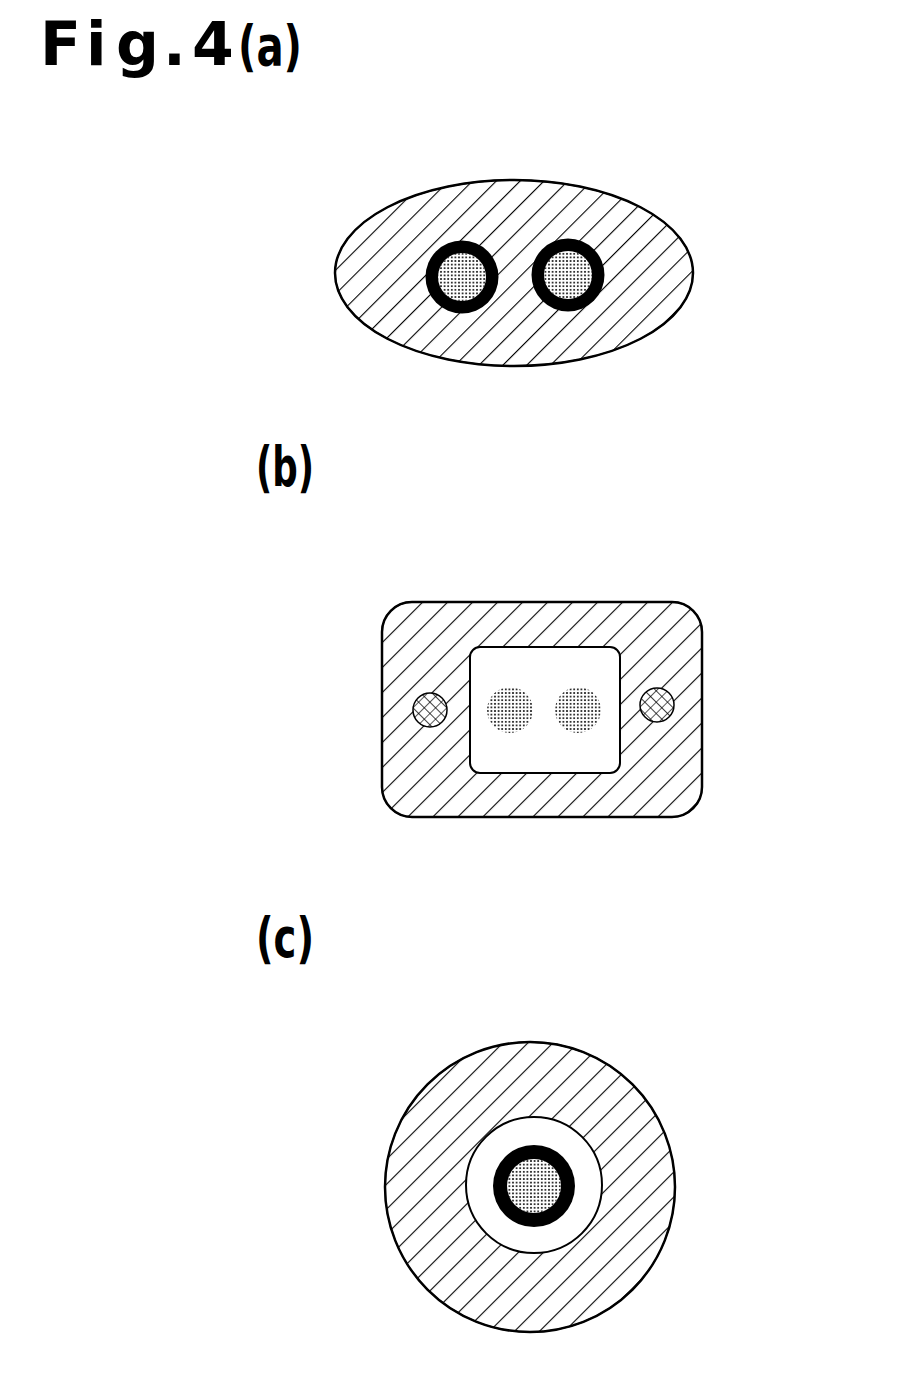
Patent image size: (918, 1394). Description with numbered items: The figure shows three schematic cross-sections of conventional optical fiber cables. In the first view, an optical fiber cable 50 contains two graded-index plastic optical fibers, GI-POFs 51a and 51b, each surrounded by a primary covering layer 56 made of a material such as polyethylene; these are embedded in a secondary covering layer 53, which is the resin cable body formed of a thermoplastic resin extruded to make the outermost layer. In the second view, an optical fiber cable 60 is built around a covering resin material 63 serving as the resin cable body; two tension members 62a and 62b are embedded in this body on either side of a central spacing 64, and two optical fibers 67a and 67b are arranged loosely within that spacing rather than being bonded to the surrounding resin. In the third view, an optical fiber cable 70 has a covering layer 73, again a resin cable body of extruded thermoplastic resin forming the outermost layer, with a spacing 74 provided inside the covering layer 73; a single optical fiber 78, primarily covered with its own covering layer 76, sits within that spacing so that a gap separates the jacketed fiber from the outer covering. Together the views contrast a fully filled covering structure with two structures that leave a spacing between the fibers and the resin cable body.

In FIG. 4a, the optical fiber cable 50 is at (513, 242).
In FIG. 4a, the GI-POF 51a is at (443, 239).
In FIG. 4a, the GI-POF 51b is at (609, 245).
In FIG. 4a, the secondary covering layer 53 is at (677, 246).
In FIG. 4a, the primary covering layer 56 is at (604, 298).
In FIG. 4b, the optical fiber cable 60 is at (529, 711).
In FIG. 4b, the tension member 62a is at (420, 703).
In FIG. 4b, the tension member 62b is at (670, 700).
In FIG. 4b, the covering resin material 63 is at (690, 741).
In FIG. 4b, the spacing 64 is at (540, 768).
In FIG. 4b, the optical fiber 67a is at (487, 700).
In FIG. 4b, the optical fiber 67b is at (577, 687).
In FIG. 4c, the optical fiber cable 70 is at (511, 1171).
In FIG. 4c, the covering layer 73 is at (646, 1223).
In FIG. 4c, the spacing 74 is at (588, 1167).
In FIG. 4c, the covering layer 76 is at (552, 1142).
In FIG. 4c, the optical fiber 78 is at (517, 1143).